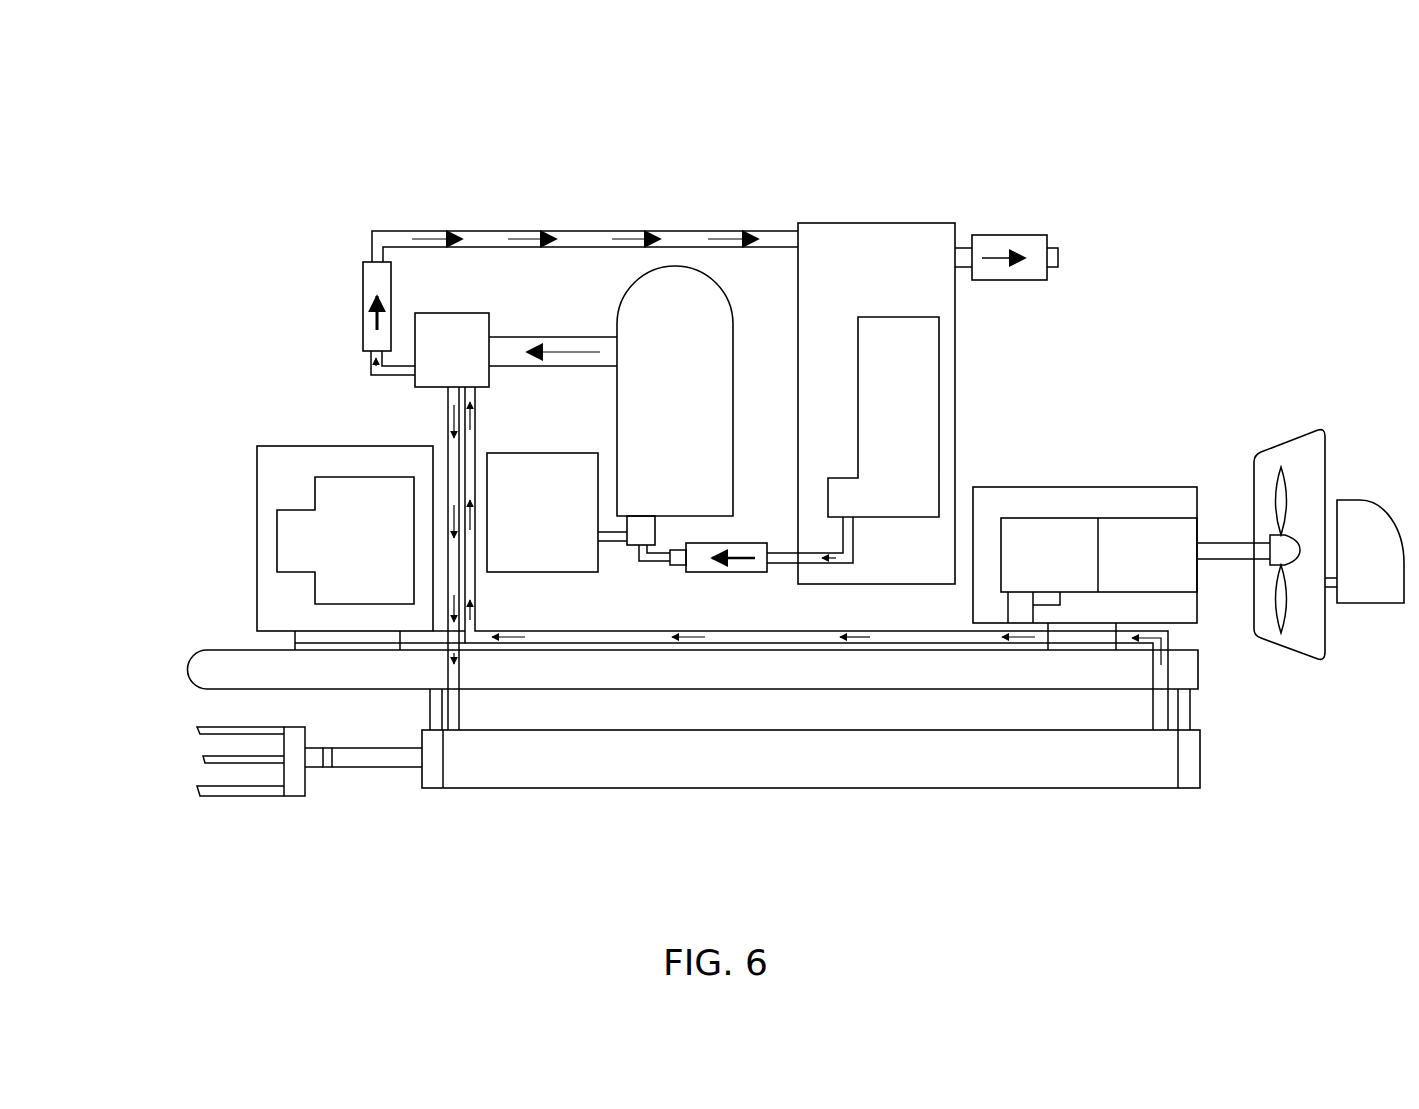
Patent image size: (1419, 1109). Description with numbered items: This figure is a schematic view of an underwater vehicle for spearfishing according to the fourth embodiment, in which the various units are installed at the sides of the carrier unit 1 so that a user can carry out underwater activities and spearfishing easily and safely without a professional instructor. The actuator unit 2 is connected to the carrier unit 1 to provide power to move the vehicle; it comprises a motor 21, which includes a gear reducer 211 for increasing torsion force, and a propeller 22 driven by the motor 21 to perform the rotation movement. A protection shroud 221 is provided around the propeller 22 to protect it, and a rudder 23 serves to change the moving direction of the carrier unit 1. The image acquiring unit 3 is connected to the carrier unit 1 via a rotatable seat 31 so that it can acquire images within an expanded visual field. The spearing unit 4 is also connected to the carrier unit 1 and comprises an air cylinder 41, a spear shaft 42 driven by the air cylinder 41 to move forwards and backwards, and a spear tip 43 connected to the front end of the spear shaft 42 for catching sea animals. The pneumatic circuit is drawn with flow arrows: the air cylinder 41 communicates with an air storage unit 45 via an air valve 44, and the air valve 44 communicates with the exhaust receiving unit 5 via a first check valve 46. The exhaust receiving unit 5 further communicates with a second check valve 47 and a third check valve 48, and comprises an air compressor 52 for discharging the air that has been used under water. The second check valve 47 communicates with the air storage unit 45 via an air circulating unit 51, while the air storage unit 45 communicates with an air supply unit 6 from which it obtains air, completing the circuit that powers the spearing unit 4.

The carrier unit 1 is at (177, 678).
The actuator unit 2 is at (1014, 482).
The motor 21 is at (1123, 547).
The gear reducer 211 is at (1060, 538).
The propeller 22 is at (1283, 548).
The protection shroud 221 is at (1258, 475).
The rudder 23 is at (1370, 587).
The image acquiring unit 3 is at (246, 483).
The rotatable seat 31 is at (297, 636).
The spearing unit 4 is at (857, 800).
The air cylinder 41 is at (1157, 765).
The spear shaft 42 is at (387, 758).
The spear tip 43 is at (293, 778).
The air valve 44 is at (445, 327).
The air storage unit 45 is at (675, 282).
The first check valve 46 is at (366, 312).
The second check valve 47 is at (743, 538).
The third check valve 48 is at (998, 245).
The exhaust receiving unit 5 is at (812, 223).
The air circulating unit 51 is at (648, 555).
The air compressor 52 is at (876, 332).
The air supply unit 6 is at (513, 478).